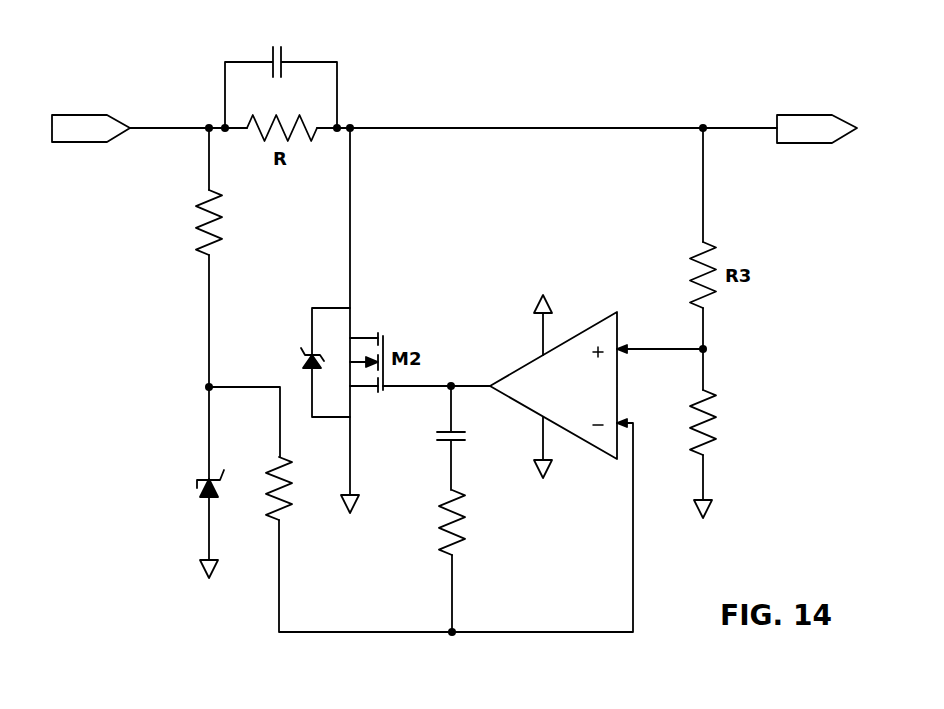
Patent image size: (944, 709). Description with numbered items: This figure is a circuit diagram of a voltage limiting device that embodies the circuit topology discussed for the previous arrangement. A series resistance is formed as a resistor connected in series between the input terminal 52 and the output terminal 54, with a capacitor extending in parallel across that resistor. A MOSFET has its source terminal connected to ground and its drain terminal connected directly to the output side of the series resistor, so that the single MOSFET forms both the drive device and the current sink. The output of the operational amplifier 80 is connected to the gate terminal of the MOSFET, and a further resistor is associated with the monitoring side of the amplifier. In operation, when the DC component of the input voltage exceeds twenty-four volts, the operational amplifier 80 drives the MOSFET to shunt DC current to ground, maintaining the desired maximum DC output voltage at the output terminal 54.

The input terminal 52 is at (209, 125).
The output terminal 54 is at (703, 125).
The operational amplifier 80 is at (585, 325).